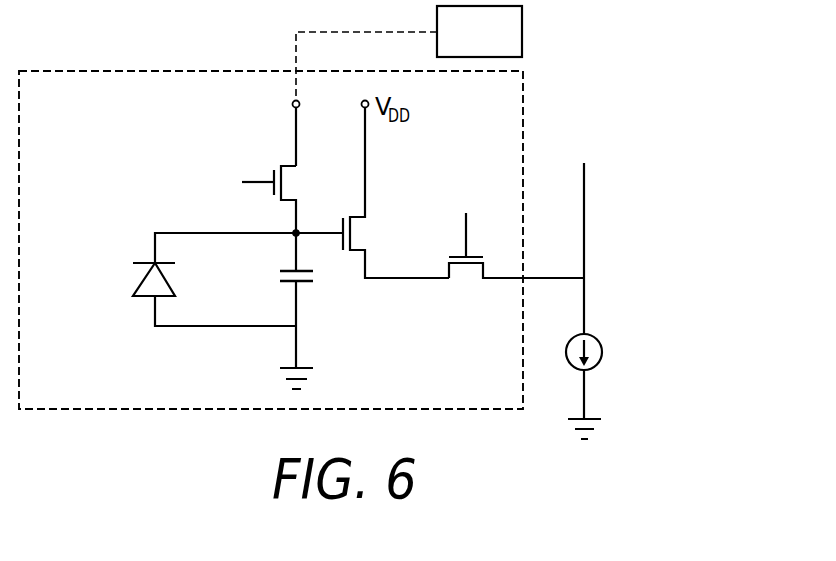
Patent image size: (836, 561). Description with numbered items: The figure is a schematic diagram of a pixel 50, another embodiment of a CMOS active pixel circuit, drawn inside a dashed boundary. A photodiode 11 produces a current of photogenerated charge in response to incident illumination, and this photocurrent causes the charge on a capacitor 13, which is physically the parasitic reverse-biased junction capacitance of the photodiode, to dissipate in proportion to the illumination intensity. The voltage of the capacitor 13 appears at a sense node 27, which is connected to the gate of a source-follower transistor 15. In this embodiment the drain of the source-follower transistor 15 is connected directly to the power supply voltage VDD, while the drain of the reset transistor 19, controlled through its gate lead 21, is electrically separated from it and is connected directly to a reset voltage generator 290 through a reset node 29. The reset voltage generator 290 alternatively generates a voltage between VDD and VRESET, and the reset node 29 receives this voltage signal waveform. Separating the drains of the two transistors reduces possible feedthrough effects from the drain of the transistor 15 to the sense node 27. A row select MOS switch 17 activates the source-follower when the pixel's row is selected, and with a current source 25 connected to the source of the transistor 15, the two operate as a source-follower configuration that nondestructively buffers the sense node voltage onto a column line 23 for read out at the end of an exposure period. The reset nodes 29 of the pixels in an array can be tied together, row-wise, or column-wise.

The pixel 50 is at (172, 68).
The reset voltage generator 290 is at (523, 30).
The reset node 29 is at (292, 104).
The reset transistor 21 is at (253, 181).
The reset transistor 19 is at (273, 193).
The sense node 27 is at (298, 230).
The photodiode 11 is at (142, 280).
The capacitor 13 is at (287, 270).
The source-follower transistor 15 is at (357, 232).
The row select MOS switch 17 is at (464, 280).
The column line 23 is at (584, 212).
The current source 25 is at (603, 352).